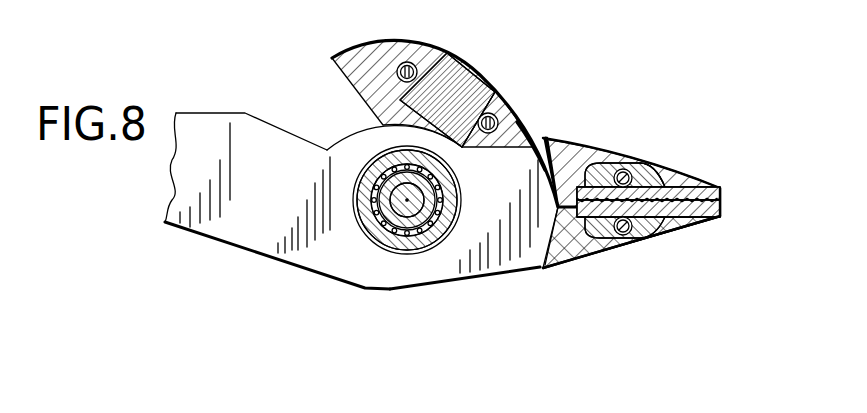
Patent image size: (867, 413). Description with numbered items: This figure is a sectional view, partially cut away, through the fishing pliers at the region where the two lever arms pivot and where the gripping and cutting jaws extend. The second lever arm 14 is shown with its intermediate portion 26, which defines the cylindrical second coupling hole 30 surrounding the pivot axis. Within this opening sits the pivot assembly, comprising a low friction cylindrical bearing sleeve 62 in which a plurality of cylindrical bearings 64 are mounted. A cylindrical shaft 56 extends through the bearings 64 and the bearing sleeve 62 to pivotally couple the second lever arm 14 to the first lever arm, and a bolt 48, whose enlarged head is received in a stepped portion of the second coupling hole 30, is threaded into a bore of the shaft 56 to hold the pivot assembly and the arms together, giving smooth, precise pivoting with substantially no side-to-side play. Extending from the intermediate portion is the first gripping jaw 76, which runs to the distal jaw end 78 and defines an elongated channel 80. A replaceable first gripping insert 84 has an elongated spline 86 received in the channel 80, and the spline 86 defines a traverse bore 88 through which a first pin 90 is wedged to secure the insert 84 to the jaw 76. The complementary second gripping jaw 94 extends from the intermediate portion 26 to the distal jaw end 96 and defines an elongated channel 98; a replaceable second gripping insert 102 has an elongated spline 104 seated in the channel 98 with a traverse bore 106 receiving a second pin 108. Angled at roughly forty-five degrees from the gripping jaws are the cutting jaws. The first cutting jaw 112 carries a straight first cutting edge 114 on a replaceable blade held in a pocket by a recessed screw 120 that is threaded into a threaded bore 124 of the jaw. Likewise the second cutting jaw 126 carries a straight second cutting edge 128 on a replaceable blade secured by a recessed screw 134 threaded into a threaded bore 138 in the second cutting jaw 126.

The second lever arm 14 is at (241, 252).
The intermediate portion 26 is at (496, 264).
The second coupling hole 30 is at (357, 214).
The bolt 48 is at (444, 191).
The cylindrical shaft 56 is at (376, 146).
The bearing sleeve 62 is at (374, 247).
The cylindrical bearings 64 is at (428, 234).
The first gripping jaw 76 is at (586, 149).
The distal jaw end 78 is at (712, 186).
The elongated channel 80 is at (694, 178).
The first gripping insert 84 is at (722, 196).
The elongated spline 86 is at (660, 176).
The traverse bore 88 is at (641, 162).
The first pin 90 is at (623, 168).
The second gripping jaw 94 is at (562, 267).
The distal jaw end 96 is at (705, 246).
The elongated channel 98 is at (675, 243).
The second gripping insert 102 is at (718, 226).
The elongated spline 104 is at (645, 250).
The traverse bore 106 is at (586, 257).
The second pin 108 is at (621, 240).
The first cutting jaw 112 is at (357, 47).
The first cutting edge 114 is at (483, 70).
The recessed screw 120 is at (424, 44).
The threaded bore 124 is at (407, 61).
The second cutting jaw 126 is at (497, 117).
The second cutting edge 128 is at (494, 95).
The recessed screw 134 is at (545, 137).
The threaded bore 138 is at (522, 130).